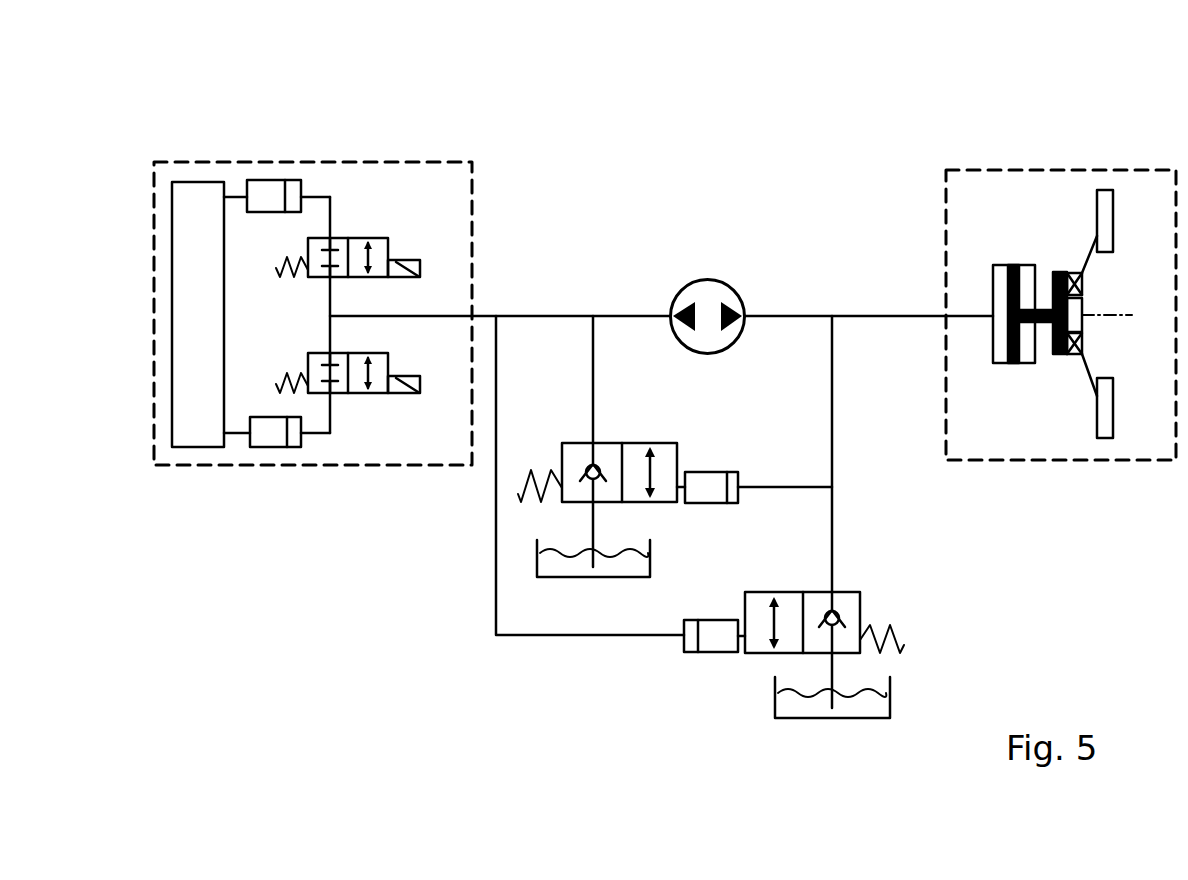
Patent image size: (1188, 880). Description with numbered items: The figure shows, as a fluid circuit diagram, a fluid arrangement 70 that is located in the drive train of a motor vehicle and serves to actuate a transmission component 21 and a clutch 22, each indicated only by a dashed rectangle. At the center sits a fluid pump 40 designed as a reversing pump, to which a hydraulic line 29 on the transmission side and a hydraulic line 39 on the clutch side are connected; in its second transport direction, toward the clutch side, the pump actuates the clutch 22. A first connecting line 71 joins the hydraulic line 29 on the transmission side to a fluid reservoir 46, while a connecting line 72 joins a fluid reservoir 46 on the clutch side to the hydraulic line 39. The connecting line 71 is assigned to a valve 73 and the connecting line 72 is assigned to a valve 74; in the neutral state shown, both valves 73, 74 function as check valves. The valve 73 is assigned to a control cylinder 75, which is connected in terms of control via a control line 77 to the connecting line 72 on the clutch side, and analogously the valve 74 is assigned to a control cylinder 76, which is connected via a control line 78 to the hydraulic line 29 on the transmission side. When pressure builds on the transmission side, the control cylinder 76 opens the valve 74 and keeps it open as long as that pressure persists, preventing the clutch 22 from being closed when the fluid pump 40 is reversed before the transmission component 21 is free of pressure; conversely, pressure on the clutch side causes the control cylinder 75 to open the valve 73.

The fluid arrangement 70 is at (1075, 78).
The transmission component 21 is at (314, 296).
The clutch 22 is at (1061, 299).
The hydraulic line on the transmission side 29 is at (549, 313).
The hydraulic line on the clutch side 39 is at (813, 313).
The fluid pump 40 is at (707, 278).
The fluid reservoir 46 is at (615, 580).
The connecting line 71 is at (594, 399).
The connecting line 72 is at (833, 445).
The valve 73 is at (668, 443).
The valve 74 is at (857, 592).
The control cylinder 75 is at (735, 472).
The control cylinder 76 is at (707, 654).
The control line 77 is at (783, 490).
The control line 78 is at (570, 638).